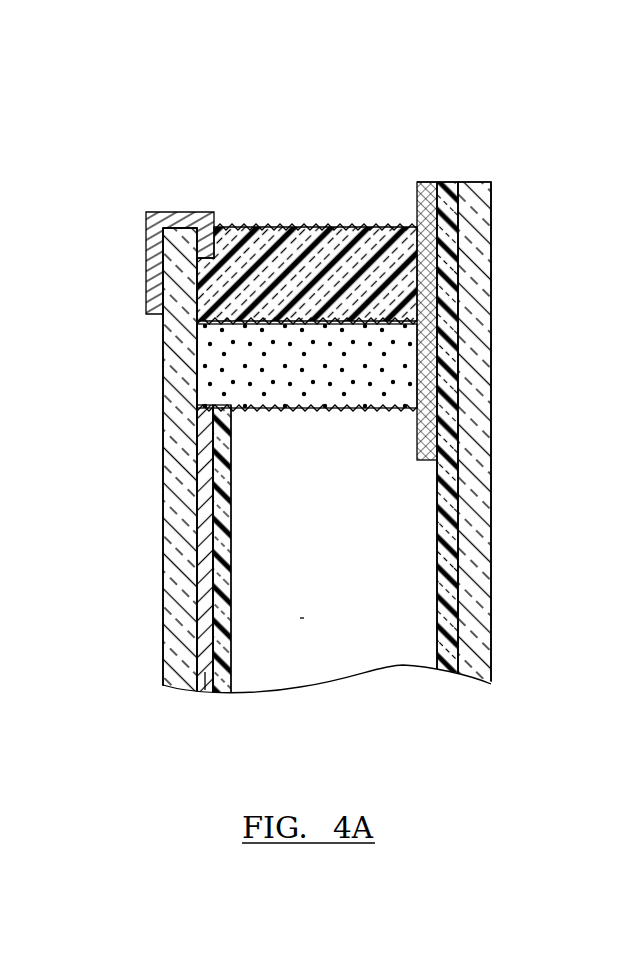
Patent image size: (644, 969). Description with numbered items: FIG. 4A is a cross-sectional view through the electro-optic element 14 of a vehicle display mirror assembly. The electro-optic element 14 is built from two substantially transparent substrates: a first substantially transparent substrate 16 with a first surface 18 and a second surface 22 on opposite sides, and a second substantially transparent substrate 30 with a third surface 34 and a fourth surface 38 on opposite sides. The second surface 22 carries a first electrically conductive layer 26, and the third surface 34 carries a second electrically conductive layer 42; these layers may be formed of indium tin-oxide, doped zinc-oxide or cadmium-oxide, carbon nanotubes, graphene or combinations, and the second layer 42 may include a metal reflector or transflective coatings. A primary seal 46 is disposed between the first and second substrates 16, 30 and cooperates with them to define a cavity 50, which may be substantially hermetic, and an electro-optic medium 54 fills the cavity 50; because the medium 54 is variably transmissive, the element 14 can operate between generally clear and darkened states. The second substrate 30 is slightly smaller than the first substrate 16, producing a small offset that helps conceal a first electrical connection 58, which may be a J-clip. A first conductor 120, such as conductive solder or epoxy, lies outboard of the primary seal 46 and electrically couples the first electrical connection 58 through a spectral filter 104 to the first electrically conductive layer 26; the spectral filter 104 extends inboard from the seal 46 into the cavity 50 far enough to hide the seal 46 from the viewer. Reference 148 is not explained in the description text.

The electro-optic element 14 is at (285, 74).
The first substantially transparent substrate 16 is at (472, 190).
The first surface 18 is at (491, 280).
The second surface 22 is at (440, 615).
The first electrically conductive layer 26 is at (447, 190).
The second substantially transparent substrate 30 is at (180, 558).
The third surface 34 is at (197, 478).
The fourth surface 38 is at (163, 432).
The second electrically conductive layer 42 is at (226, 690).
The primary seal 46 is at (218, 357).
The cavity 50 is at (371, 628).
The electro-optic medium 54 is at (302, 620).
The first electrical connection 58 is at (180, 212).
The spectral filter 104 is at (428, 190).
The first conductor 120 is at (344, 240).
The lower end of inner layer 148 is at (204, 675).